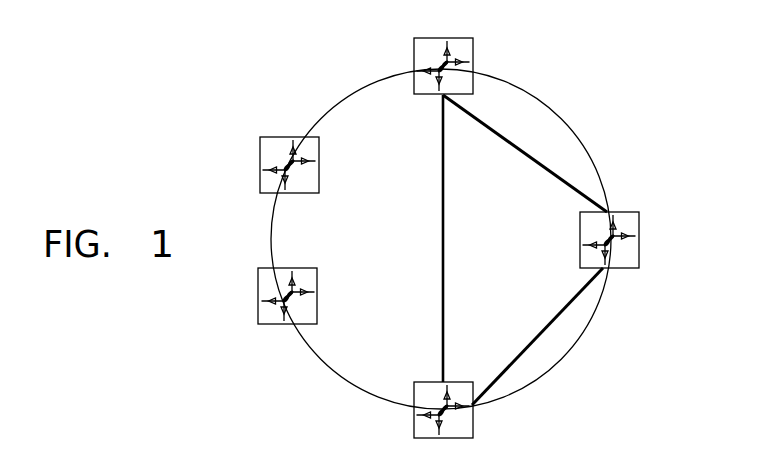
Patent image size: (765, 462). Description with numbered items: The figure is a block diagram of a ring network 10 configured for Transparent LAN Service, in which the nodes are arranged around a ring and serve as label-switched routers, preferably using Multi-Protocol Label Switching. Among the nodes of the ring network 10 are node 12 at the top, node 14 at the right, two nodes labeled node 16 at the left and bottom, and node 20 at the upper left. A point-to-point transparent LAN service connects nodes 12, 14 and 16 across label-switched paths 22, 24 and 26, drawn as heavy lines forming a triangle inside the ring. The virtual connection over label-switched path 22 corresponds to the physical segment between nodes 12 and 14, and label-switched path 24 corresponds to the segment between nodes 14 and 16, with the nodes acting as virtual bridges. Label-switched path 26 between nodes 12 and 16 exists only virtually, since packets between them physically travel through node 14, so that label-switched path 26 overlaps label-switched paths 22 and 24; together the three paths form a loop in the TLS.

The ring network 10 is at (600, 82).
The node 12 is at (473, 48).
The node 14 is at (640, 226).
The node 16 is at (318, 285).
The node 20 is at (319, 153).
The label-switched path 22 is at (513, 141).
The label-switched path 24 is at (537, 335).
The label-switched path 26 is at (443, 248).